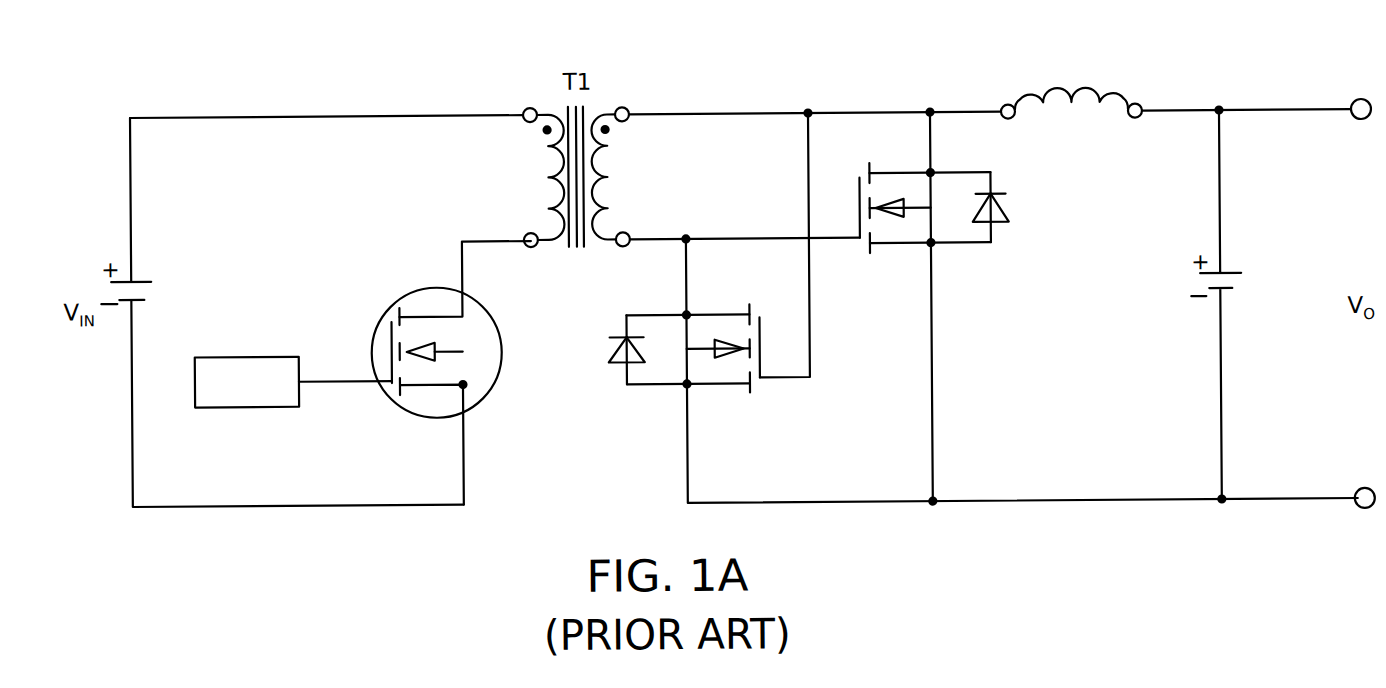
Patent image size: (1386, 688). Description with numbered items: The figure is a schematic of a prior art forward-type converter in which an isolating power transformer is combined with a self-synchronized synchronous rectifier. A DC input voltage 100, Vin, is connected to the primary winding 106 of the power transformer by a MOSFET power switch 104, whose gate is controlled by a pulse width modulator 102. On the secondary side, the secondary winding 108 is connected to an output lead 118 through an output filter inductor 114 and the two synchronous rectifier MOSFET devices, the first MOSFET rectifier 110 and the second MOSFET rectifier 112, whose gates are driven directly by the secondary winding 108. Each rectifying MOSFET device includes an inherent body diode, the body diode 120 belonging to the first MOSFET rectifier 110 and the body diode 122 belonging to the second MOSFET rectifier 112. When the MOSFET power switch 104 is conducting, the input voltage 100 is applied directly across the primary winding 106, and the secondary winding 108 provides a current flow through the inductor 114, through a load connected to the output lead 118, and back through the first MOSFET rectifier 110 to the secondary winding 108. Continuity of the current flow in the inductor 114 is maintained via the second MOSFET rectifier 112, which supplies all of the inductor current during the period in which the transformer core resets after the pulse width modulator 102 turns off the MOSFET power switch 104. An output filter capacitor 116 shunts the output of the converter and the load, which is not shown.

The DC input voltage 100 is at (153, 260).
The pulse width modulator 102 is at (236, 414).
The MOSFET power switch Q1 104 is at (399, 260).
The primary winding 106 is at (546, 89).
The secondary winding 108 is at (609, 87).
The MOSFET rectifier Q2 110 is at (768, 414).
The MOSFET rectifier Q3 112 is at (890, 265).
The output filter inductor 114 is at (1153, 93).
The output filter capacitor 116 is at (1236, 254).
The output lead 118 is at (1351, 89).
The body diode 120 is at (617, 416).
The body diode 122 is at (1009, 249).